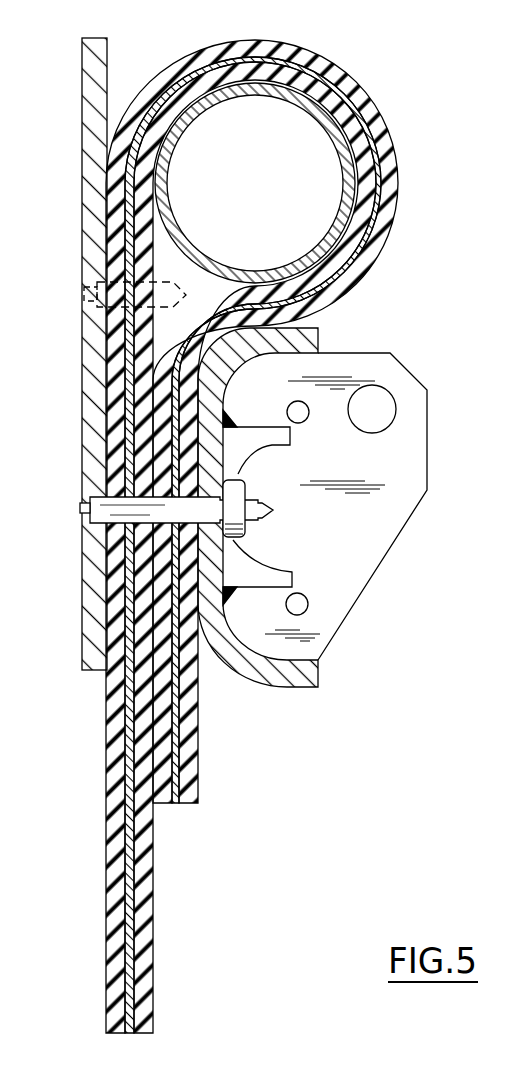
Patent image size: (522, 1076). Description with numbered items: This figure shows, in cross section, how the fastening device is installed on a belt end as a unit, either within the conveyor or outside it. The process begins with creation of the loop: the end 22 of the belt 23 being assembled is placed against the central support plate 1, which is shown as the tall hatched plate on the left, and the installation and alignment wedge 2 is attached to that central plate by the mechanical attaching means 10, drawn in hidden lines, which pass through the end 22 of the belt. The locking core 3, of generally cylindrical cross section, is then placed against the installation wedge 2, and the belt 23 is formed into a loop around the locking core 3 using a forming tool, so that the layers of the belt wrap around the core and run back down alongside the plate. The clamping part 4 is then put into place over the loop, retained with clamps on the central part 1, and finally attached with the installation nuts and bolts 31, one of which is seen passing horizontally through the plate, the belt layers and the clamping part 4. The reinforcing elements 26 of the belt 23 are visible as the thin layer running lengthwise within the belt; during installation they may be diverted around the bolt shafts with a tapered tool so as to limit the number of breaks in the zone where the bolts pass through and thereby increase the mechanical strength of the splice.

The central support plate 1 is at (92, 384).
The installation and alignment wedge 2 is at (252, 520).
The locking core 3 is at (386, 162).
The clamping part 4 is at (320, 344).
The attaching means 10 is at (95, 298).
The belt end 22 is at (158, 78).
The belt 23 is at (141, 963).
The reinforcing elements 26 is at (129, 904).
The installation nuts and bolts 31 is at (95, 512).